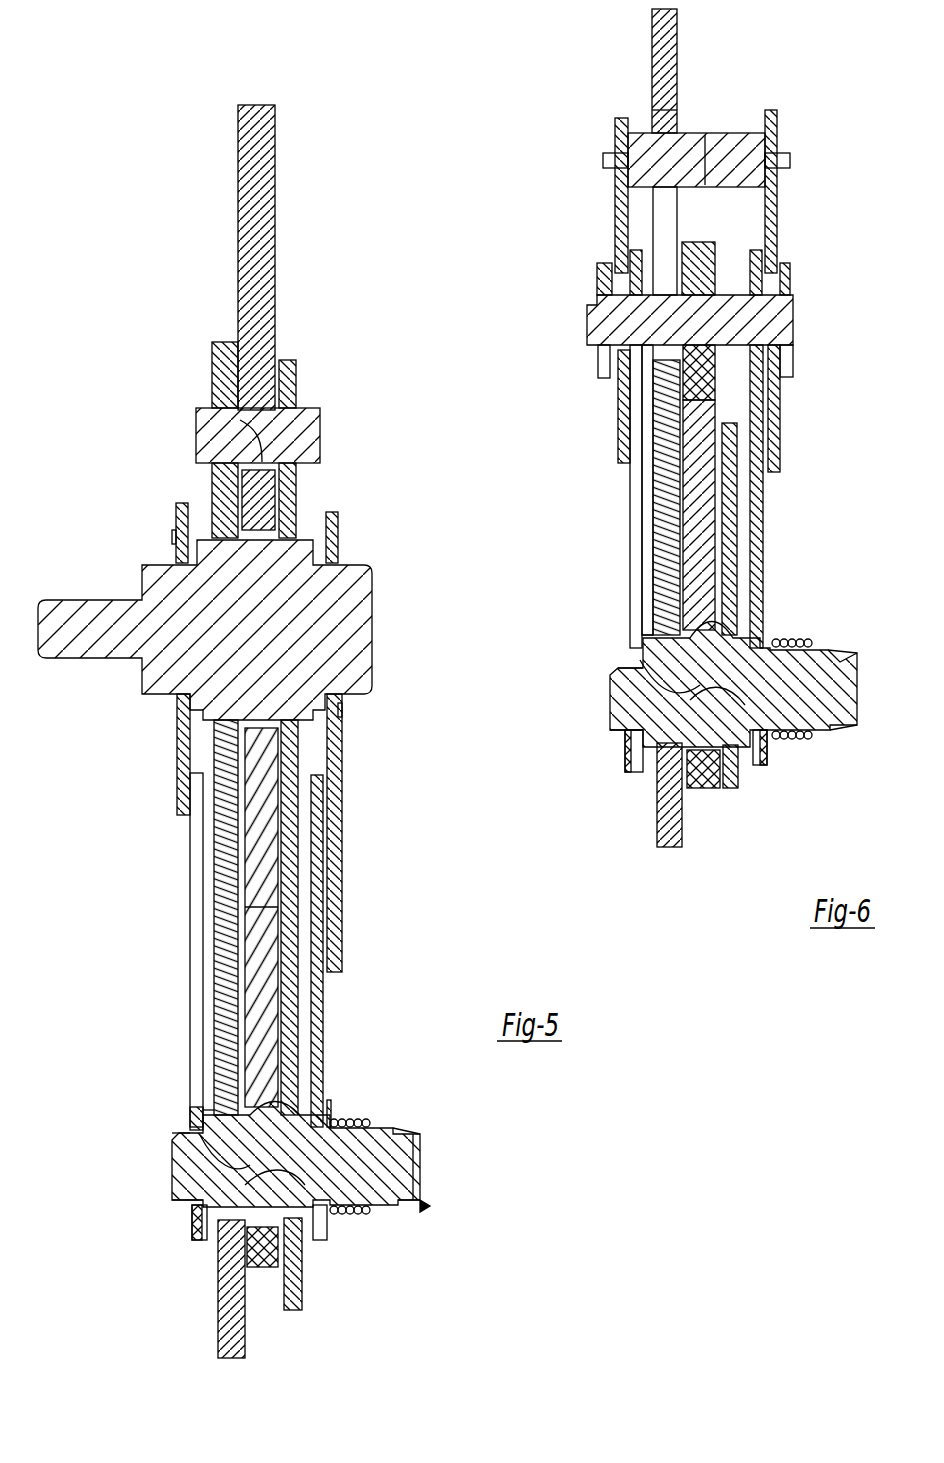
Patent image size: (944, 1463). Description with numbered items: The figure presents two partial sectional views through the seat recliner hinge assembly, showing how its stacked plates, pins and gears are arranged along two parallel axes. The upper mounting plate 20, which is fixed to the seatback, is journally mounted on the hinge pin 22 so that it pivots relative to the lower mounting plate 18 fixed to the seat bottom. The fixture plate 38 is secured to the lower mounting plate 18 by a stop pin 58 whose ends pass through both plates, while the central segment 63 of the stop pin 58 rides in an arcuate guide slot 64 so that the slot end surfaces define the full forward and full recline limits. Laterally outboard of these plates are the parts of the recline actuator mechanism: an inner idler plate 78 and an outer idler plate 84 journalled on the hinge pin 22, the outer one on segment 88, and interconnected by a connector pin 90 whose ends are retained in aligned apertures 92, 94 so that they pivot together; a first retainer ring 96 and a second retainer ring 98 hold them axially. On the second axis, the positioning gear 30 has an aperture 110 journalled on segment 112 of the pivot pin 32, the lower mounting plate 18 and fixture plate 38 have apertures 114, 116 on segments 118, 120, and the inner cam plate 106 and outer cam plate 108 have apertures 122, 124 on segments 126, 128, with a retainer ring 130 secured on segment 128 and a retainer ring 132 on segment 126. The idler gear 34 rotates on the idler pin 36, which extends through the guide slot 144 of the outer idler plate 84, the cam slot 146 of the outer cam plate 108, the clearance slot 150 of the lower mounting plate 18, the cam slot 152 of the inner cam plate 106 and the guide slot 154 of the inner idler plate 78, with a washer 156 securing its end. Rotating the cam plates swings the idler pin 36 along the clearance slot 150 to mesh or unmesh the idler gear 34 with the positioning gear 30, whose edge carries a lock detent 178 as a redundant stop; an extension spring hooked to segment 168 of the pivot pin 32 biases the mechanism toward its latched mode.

In FIG. 5, the lower mounting plate 18 is at (218, 372).
In FIG. 6, the lower mounting plate 18 is at (660, 525).
In FIG. 5, the upper mounting plate 20 is at (262, 208).
In FIG. 6, the upper mounting plate 20 is at (668, 40).
In FIG. 5, the hinge pin 22 is at (343, 612).
In FIG. 5, the positioning gear 30 is at (226, 945).
In FIG. 6, the positioning gear 30 is at (668, 525).
In FIG. 5, the pivot pin 32 is at (420, 1180).
In FIG. 6, the pivot pin 32 is at (850, 670).
In FIG. 6, the idler gear 34 is at (700, 265).
In FIG. 6, the idler pin 36 is at (770, 320).
In FIG. 5, the fixture plate 38 is at (286, 375).
In FIG. 6, the fixture plate 38 is at (730, 580).
In FIG. 5, the stop pin 58 is at (312, 432).
In FIG. 5, the central segment 63 is at (262, 478).
In FIG. 5, the arcuate guide slot 64 is at (252, 445).
In FIG. 5, the inner idler plate 78 is at (183, 760).
In FIG. 5, the outer idler plate 84 is at (333, 822).
In FIG. 6, the outer idler plate 84 is at (772, 215).
In FIG. 5, the segment 88 is at (338, 560).
In FIG. 6, the connector pin 90 is at (745, 130).
In FIG. 6, the aperture 92 is at (612, 160).
In FIG. 6, the aperture 94 is at (785, 160).
In FIG. 5, the first retainer ring 96 is at (176, 535).
In FIG. 5, the second retainer ring 98 is at (342, 712).
In FIG. 5, the inner cam plate 106 is at (197, 862).
In FIG. 6, the inner cam plate 106 is at (636, 500).
In FIG. 5, the outer cam plate 108 is at (317, 995).
In FIG. 6, the outer cam plate 108 is at (756, 500).
In FIG. 5, the aperture 110 is at (245, 1185).
In FIG. 6, the aperture 110 is at (690, 700).
In FIG. 5, the segment 112 is at (200, 1240).
In FIG. 6, the segment 112 is at (670, 800).
In FIG. 5, the aperture 114 is at (200, 1205).
In FIG. 6, the aperture 114 is at (640, 725).
In FIG. 5, the aperture 116 is at (355, 1125).
In FIG. 6, the aperture 116 is at (790, 642).
In FIG. 5, the segment 118 is at (232, 1110).
In FIG. 6, the segment 118 is at (652, 630).
In FIG. 5, the segment 120 is at (300, 1250).
In FIG. 6, the segment 120 is at (735, 790).
In FIG. 5, the aperture 122 is at (200, 1162).
In FIG. 6, the aperture 122 is at (690, 680).
In FIG. 5, the aperture 124 is at (400, 1198).
In FIG. 6, the aperture 124 is at (835, 710).
In FIG. 5, the segment 126 is at (185, 1135).
In FIG. 6, the segment 126 is at (630, 650).
In FIG. 5, the segment 128 is at (430, 1210).
In FIG. 5, the retainer ring 130 is at (330, 1108).
In FIG. 6, the retainer ring 130 is at (775, 765).
In FIG. 5, the retainer ring 132 is at (192, 1123).
In FIG. 6, the retainer ring 132 is at (635, 765).
In FIG. 6, the guide slot 144 is at (774, 410).
In FIG. 6, the cam slot 146 is at (787, 365).
In FIG. 6, the clearance slot 150 is at (715, 140).
In FIG. 6, the cam slot 152 is at (603, 360).
In FIG. 6, the guide slot 154 is at (624, 400).
In FIG. 6, the washer 156 is at (605, 290).
In FIG. 5, the segment 168 is at (405, 1130).
In FIG. 6, the segment 168 is at (840, 735).
In FIG. 6, the lock detent 178 is at (622, 205).